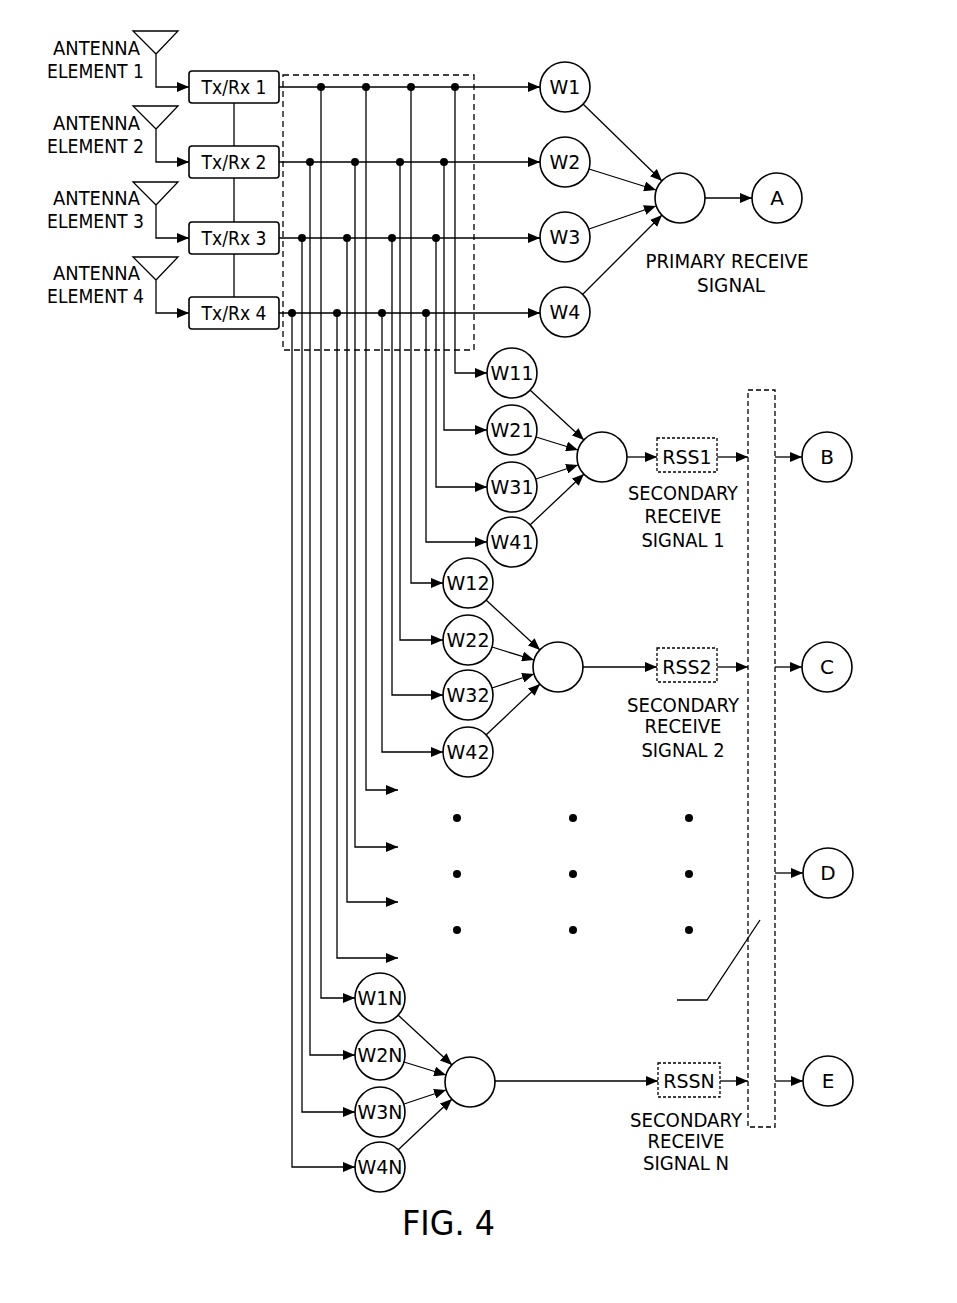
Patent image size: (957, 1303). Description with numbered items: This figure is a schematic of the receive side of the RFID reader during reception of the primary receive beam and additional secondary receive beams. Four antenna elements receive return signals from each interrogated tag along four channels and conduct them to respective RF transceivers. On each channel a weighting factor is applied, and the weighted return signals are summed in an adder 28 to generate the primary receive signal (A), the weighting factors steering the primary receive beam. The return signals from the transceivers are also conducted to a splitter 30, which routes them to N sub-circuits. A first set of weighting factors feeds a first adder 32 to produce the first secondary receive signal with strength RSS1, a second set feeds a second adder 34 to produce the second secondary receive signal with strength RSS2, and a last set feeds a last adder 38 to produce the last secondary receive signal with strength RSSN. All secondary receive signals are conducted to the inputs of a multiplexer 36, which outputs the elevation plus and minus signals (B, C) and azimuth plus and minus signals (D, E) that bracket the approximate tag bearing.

The adder 28 is at (681, 174).
The splitter 30 is at (397, 70).
The first adder 32 is at (602, 433).
The second adder 34 is at (557, 642).
The multiplexer 36 is at (776, 945).
The last adder 38 is at (469, 1057).